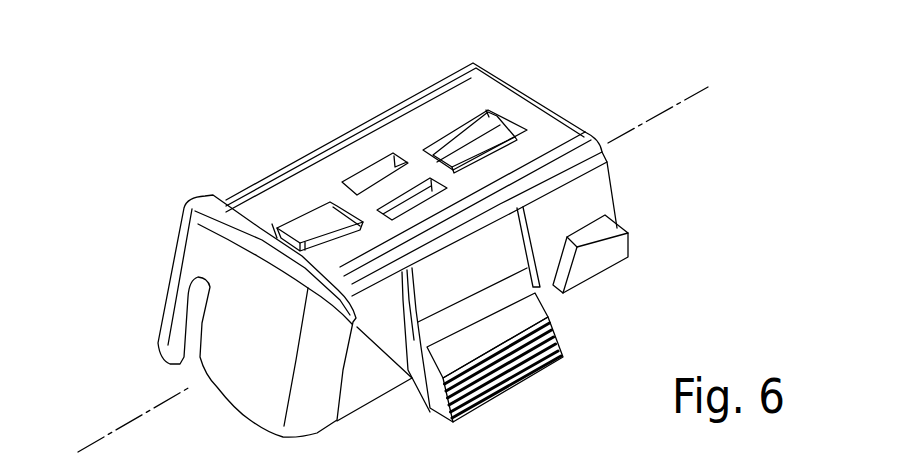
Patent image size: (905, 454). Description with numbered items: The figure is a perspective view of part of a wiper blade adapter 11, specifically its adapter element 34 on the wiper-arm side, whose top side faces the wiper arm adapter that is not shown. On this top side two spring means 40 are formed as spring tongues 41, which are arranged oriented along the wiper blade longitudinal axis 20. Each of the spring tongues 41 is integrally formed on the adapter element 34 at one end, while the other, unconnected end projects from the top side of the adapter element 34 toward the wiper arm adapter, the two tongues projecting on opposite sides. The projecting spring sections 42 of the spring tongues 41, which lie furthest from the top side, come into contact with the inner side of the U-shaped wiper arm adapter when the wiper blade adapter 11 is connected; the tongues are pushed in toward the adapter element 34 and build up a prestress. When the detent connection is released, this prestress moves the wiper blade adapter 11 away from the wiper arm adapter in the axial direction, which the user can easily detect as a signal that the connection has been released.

The wiper blade adapter 11 is at (620, 178).
The wiper blade longitudinal axis 20 is at (648, 118).
The adapter element on the wiper-arm side 34 is at (595, 203).
The spring means 40 is at (397, 135).
The spring tongues 41 is at (312, 228).
The projecting spring sections 42 is at (272, 228).